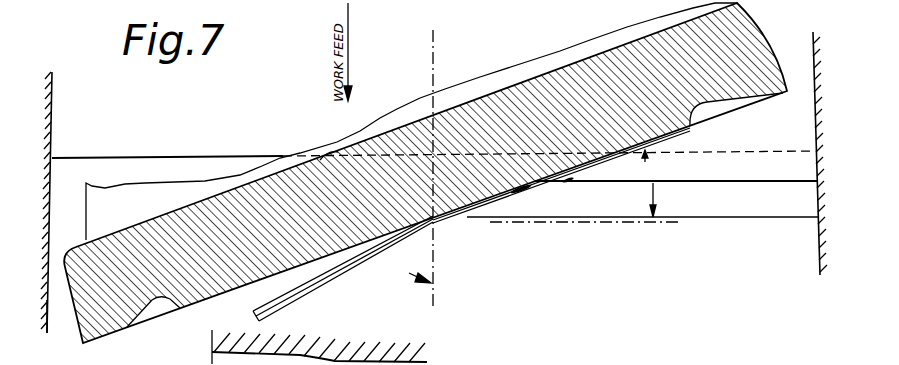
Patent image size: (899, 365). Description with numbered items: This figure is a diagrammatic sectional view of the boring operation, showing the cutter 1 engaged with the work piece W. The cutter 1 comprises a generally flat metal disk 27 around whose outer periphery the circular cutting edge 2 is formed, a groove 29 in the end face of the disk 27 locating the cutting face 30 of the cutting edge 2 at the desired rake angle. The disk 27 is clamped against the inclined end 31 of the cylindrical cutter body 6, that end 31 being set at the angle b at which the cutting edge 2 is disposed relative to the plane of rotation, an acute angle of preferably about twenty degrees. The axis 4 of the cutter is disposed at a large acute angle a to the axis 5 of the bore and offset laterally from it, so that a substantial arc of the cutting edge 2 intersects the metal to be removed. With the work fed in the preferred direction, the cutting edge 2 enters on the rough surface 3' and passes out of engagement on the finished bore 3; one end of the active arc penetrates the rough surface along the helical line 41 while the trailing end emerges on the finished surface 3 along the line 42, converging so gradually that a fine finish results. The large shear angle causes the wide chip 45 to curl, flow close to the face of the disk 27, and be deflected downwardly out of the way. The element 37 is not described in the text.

The cutter 1 is at (547, 195).
The cutting edge 2 is at (787, 94).
The finished bore 3 is at (56, 319).
The rough surface 3' is at (63, 202).
The axis of the cutter 4 is at (344, 267).
The axis of the bore 5 is at (436, 258).
The body 6 is at (405, 107).
The disk 27 is at (484, 100).
The groove 29 is at (165, 310).
The cutting face 30 is at (128, 324).
The end of the body 31 is at (340, 146).
The shim 37 is at (441, 224).
The helical line 41 is at (745, 150).
The line of emergence 42 is at (720, 218).
The chip 45 is at (338, 273).
The work piece W is at (54, 128).
The acute angle a is at (411, 272).
The angle b is at (648, 183).